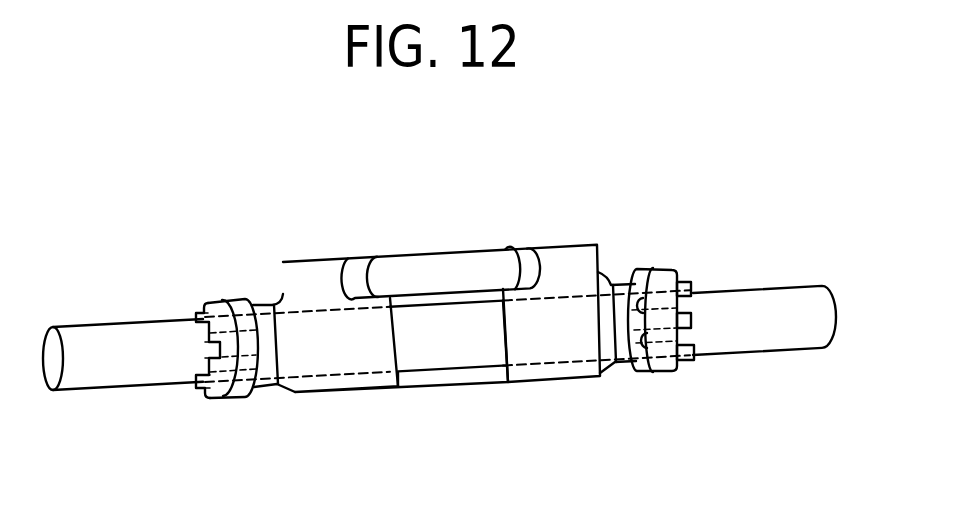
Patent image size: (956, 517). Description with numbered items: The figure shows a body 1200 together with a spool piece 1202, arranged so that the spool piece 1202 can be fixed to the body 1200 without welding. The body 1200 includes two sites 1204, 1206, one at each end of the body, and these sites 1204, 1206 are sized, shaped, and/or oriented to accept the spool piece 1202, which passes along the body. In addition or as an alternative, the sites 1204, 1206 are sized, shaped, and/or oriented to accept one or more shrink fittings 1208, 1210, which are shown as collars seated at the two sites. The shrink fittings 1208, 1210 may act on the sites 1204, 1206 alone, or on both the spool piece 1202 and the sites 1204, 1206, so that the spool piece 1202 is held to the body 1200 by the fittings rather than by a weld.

The body 1200 is at (552, 243).
The spool piece 1202 is at (92, 387).
The site 1204 is at (276, 293).
The site 1206 is at (615, 280).
The shrink fitting 1208 is at (225, 394).
The shrink fitting 1210 is at (647, 376).